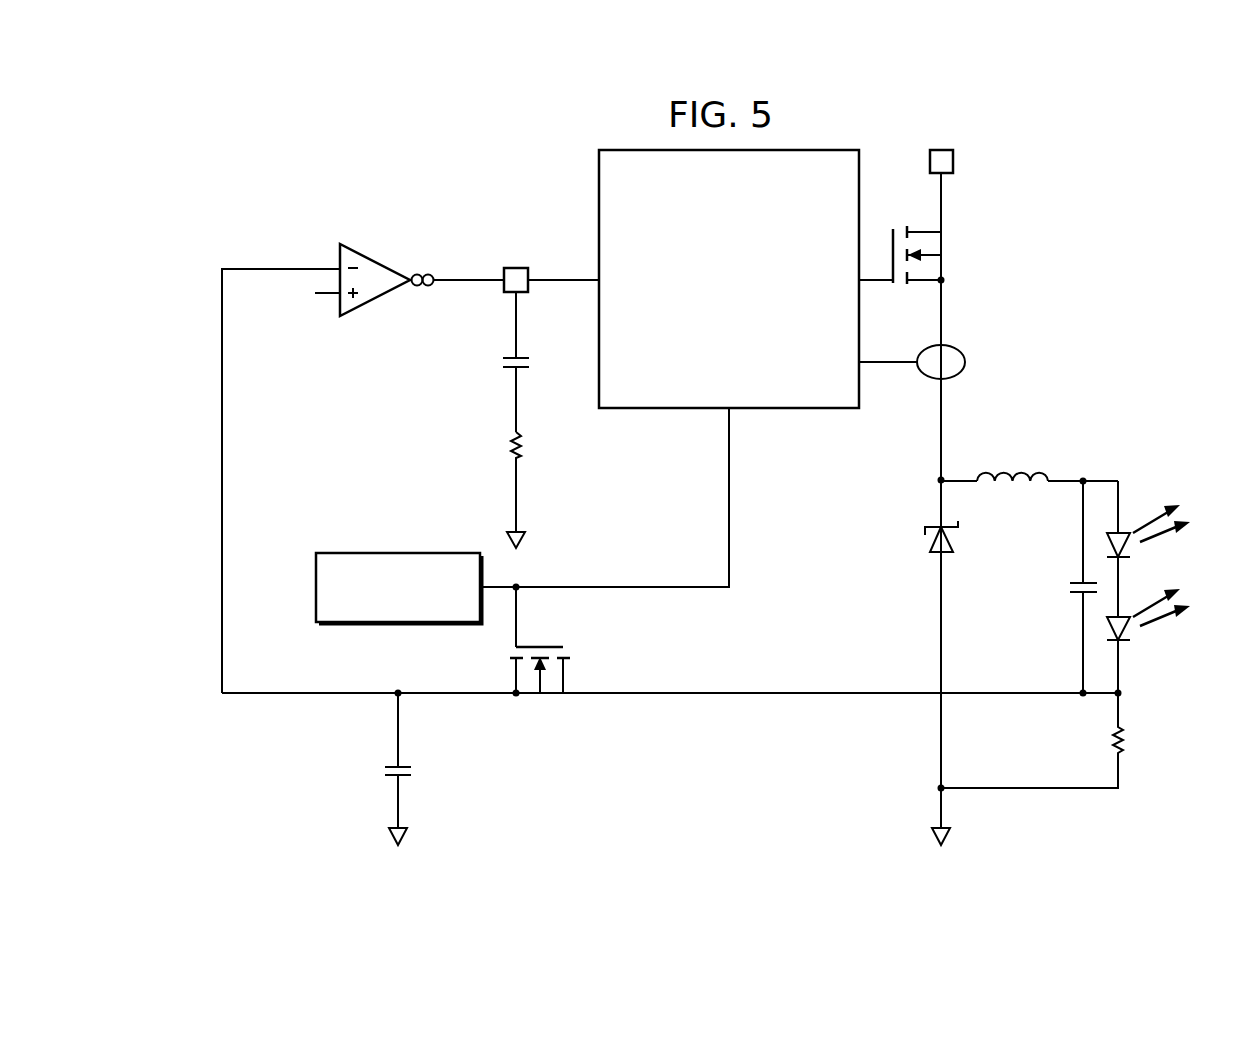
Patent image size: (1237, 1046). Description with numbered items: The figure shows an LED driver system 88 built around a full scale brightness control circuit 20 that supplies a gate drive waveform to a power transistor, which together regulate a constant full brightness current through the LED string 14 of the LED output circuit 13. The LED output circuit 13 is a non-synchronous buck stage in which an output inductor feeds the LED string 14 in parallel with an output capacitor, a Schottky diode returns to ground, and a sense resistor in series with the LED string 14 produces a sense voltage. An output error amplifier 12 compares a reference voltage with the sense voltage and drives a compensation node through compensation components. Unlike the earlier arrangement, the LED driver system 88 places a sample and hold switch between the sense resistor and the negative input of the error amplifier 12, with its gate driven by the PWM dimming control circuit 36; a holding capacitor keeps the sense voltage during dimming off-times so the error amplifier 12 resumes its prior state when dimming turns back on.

The LED driver system 88 is at (556, 120).
The output error amplifier 12 is at (375, 258).
The full scale brightness control circuit 20 is at (746, 347).
The LED output circuit 13 is at (1128, 410).
The LED string 14 is at (1165, 483).
The PWM dimming control circuit 36 is at (316, 598).